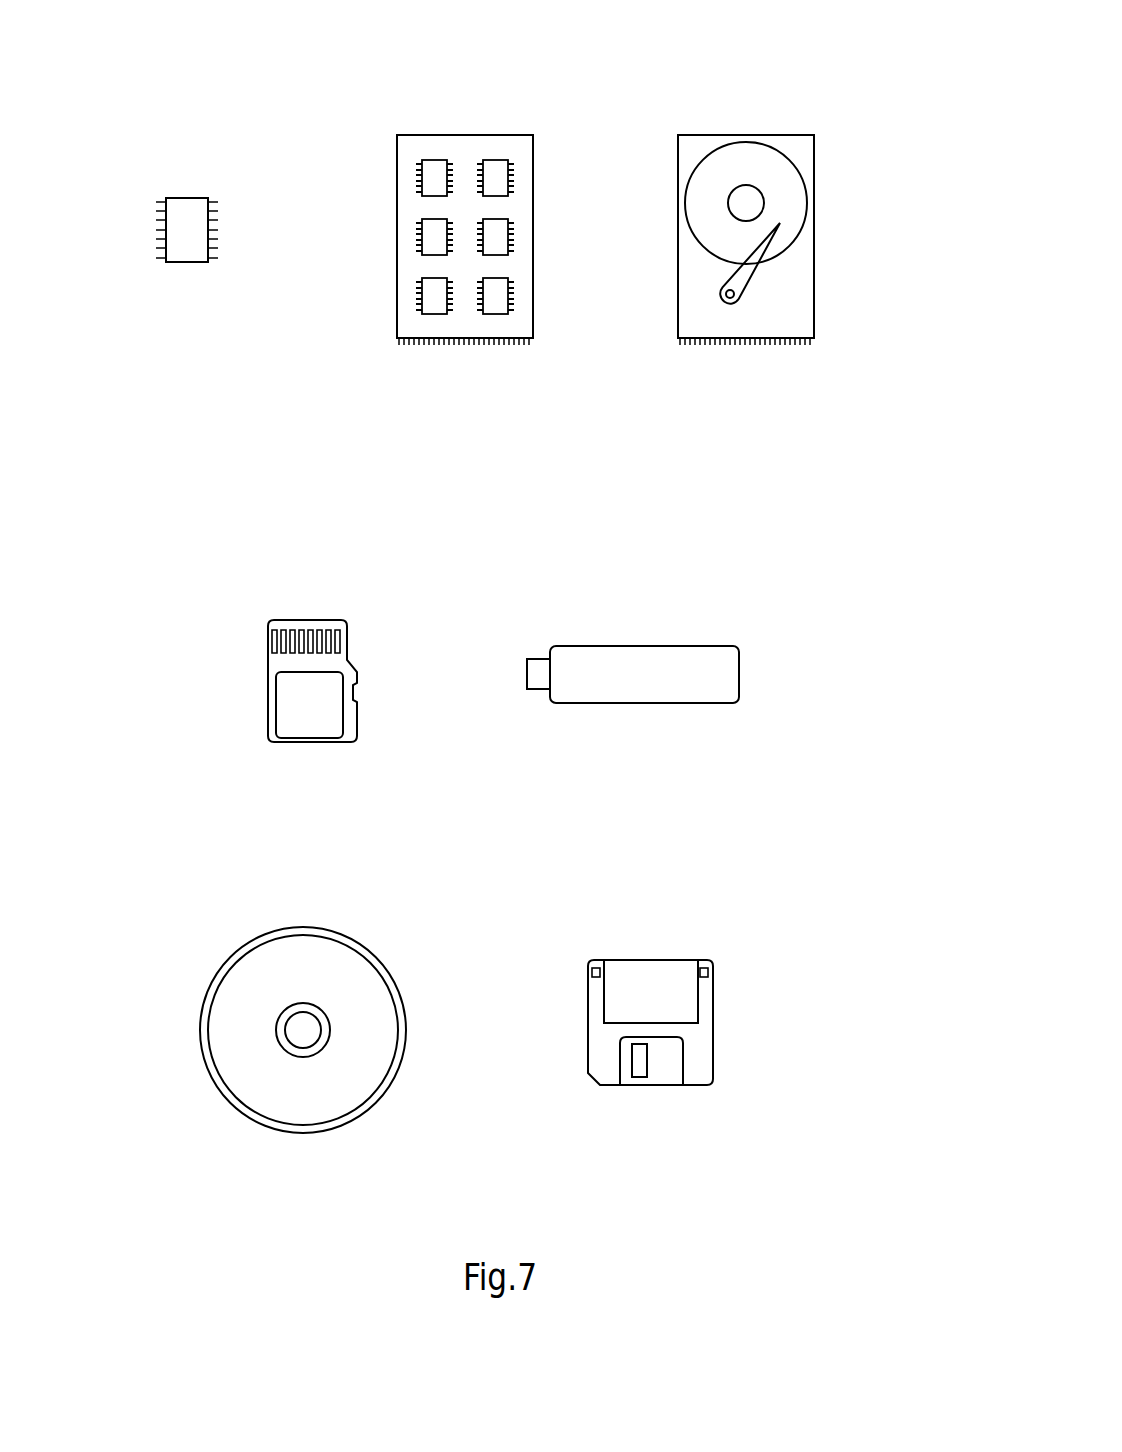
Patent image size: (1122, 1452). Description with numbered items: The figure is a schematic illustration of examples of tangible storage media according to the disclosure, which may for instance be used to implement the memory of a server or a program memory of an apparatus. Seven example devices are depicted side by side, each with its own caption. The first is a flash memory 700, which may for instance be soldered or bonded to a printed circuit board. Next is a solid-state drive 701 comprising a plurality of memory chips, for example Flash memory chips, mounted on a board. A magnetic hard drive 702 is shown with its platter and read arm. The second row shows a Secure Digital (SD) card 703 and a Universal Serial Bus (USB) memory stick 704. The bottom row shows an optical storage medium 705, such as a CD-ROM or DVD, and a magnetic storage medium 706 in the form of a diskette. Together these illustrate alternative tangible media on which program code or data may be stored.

The flash memory 700 is at (212, 160).
The solid-state drive 701 is at (534, 98).
The magnetic hard drive 702 is at (815, 98).
The Secure Digital (SD) card 703 is at (348, 588).
The Universal Serial Bus (USB) memory stick 704 is at (713, 608).
The optical storage medium 705 is at (387, 922).
The magnetic storage medium 706 is at (707, 922).